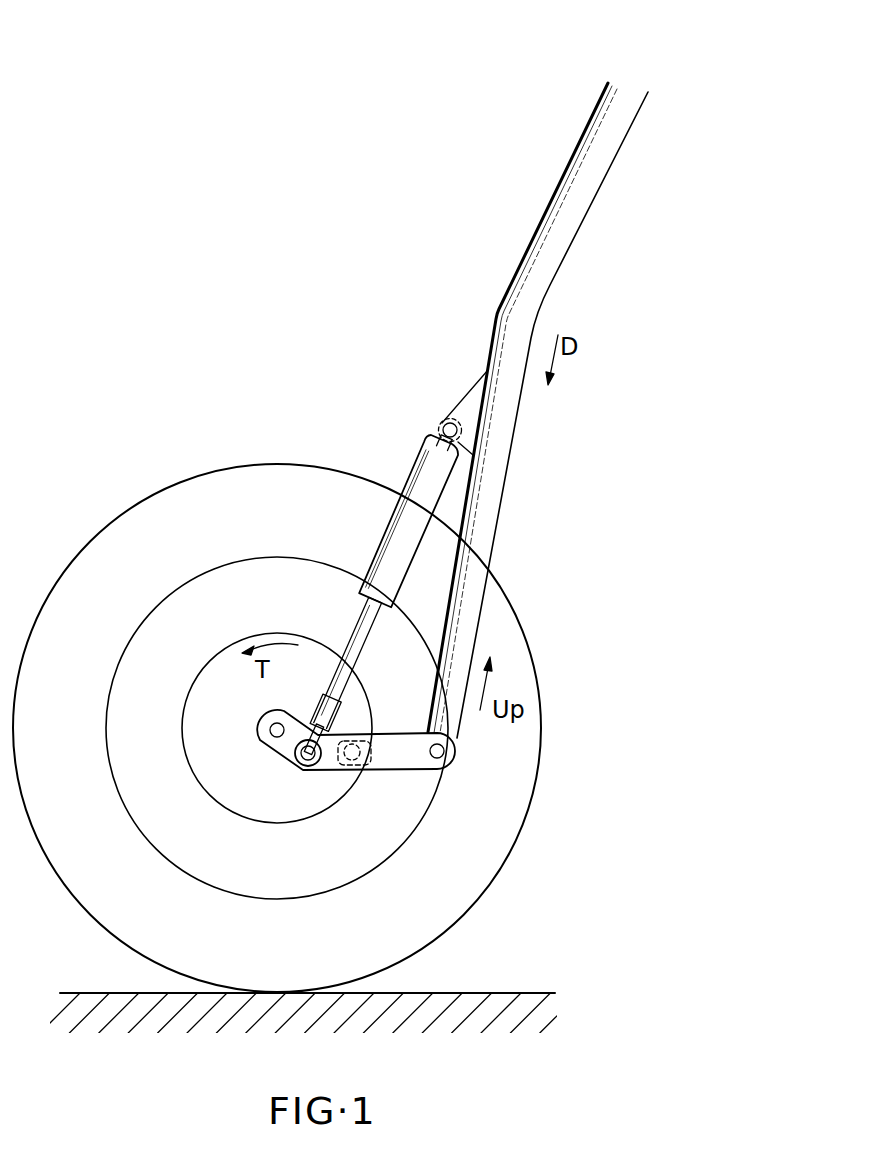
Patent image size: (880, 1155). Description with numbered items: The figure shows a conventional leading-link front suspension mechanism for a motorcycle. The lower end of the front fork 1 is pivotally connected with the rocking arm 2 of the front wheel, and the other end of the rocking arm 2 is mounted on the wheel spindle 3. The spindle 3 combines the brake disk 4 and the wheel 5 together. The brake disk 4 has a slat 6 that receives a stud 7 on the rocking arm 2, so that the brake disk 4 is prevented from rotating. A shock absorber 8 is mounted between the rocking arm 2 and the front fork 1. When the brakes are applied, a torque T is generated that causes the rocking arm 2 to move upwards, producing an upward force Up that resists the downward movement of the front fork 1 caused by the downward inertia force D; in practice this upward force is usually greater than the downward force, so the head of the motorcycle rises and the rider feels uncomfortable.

The front fork 1 is at (512, 448).
The rocking arm 2 is at (408, 757).
The wheel spindle 3 is at (273, 737).
The brake disk 4 is at (210, 703).
The wheel 5 is at (163, 508).
The slat 6 is at (352, 740).
The stud 7 is at (352, 760).
The shock absorber 8 is at (413, 470).